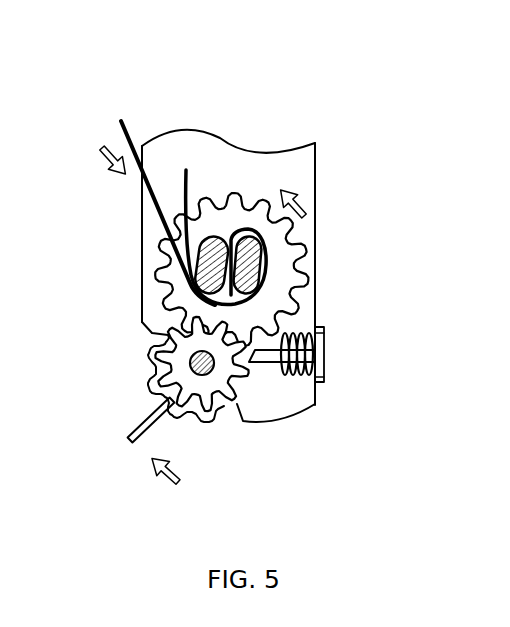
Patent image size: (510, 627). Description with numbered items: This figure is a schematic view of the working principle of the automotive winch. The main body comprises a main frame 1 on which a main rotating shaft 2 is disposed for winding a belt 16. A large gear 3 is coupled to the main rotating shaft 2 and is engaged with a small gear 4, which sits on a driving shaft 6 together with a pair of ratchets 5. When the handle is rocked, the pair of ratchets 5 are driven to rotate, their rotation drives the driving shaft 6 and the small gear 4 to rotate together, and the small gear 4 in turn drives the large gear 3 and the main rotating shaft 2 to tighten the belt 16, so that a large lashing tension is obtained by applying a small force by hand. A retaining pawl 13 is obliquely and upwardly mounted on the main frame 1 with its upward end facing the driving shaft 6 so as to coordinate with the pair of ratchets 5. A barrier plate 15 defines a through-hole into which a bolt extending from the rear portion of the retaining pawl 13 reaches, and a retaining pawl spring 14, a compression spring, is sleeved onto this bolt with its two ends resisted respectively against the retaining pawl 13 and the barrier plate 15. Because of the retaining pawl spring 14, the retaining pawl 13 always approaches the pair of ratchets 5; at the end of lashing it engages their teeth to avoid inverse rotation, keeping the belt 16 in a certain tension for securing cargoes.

The main frame 1 is at (203, 147).
The main rotating shaft 2 is at (270, 282).
The large gear 3 is at (292, 238).
The small gear 4 is at (176, 350).
The pair of ratchets 5 is at (223, 412).
The driving shaft 6 is at (190, 358).
The retaining pawl 13 is at (273, 363).
The retaining pawl spring 14 is at (300, 375).
The barrier plate 15 is at (325, 362).
The belt 16 is at (153, 199).